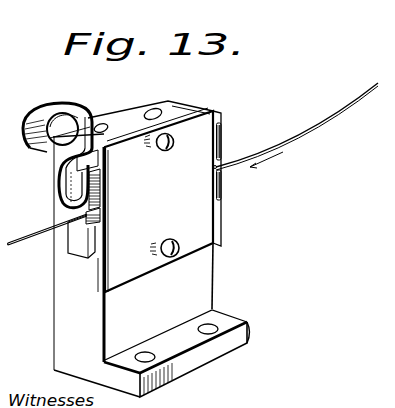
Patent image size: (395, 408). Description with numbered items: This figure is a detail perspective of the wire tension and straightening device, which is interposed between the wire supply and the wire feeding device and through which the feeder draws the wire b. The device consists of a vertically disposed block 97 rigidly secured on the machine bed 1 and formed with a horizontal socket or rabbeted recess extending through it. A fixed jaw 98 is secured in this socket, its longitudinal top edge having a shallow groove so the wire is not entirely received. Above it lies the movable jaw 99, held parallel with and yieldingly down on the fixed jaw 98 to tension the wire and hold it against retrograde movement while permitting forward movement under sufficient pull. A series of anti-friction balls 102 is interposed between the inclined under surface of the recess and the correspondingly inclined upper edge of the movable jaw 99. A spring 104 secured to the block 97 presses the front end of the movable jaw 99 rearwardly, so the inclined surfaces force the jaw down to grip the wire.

The frame 1 is at (394, 337).
The wire b is at (287, 140).
The block 97 is at (72, 283).
The fixed jaw 98 is at (87, 233).
The movable jaw 99 is at (90, 188).
The anti-friction balls 102 is at (98, 161).
The spring 104 is at (50, 101).